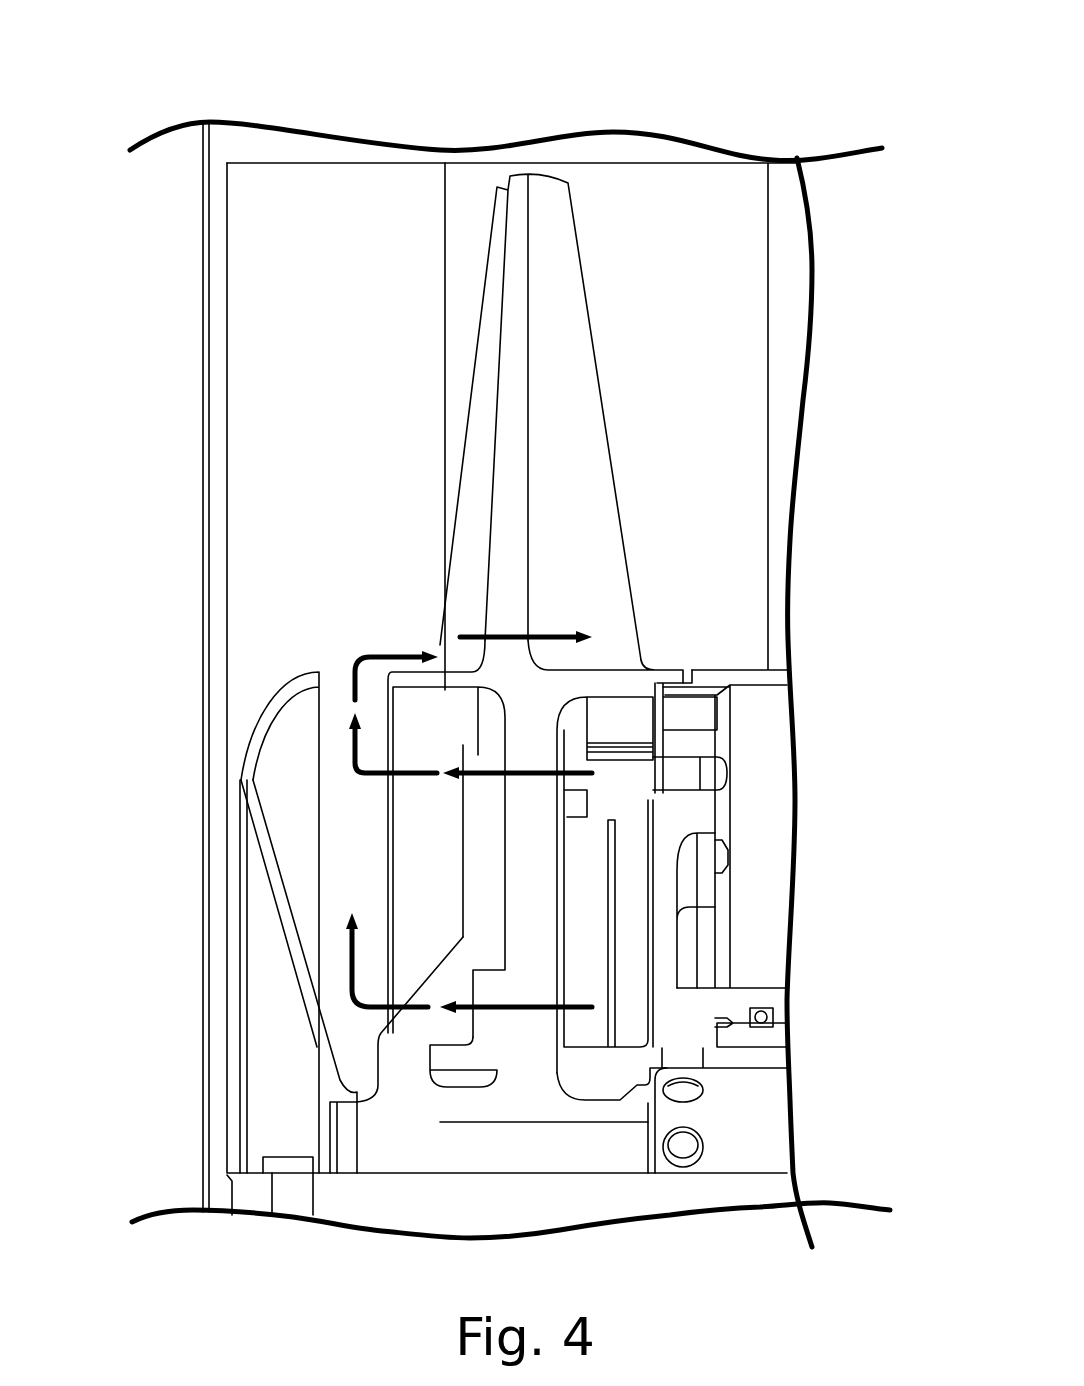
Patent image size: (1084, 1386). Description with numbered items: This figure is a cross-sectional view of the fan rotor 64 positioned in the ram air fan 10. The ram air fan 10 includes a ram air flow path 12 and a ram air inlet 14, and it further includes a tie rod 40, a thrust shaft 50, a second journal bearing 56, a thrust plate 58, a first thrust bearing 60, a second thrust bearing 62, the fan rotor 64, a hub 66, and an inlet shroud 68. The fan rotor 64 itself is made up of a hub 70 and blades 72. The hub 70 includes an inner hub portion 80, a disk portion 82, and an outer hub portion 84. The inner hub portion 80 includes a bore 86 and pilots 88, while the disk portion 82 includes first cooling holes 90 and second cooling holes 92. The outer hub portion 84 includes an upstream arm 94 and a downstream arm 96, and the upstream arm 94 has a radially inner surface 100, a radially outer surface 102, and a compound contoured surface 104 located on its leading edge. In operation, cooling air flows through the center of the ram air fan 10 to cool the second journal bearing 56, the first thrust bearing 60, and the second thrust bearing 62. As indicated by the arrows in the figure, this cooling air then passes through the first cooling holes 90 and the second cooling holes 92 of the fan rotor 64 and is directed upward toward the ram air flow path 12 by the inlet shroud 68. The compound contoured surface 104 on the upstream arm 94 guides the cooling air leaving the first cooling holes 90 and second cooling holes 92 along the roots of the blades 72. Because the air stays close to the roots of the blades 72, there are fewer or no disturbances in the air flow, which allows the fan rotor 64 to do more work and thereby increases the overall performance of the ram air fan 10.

The ram air fan 10 is at (308, 96).
The ram air flow path 12 is at (692, 396).
The ram air inlet 14 is at (203, 297).
The tie rod 40 is at (752, 1187).
The thrust shaft 50 is at (745, 1053).
The second journal bearing 56 is at (763, 1032).
The thrust plate 58 is at (590, 962).
The first thrust bearing 60 is at (648, 893).
The second thrust bearing 62 is at (610, 868).
The fan rotor 64 is at (606, 218).
The hub 66 is at (478, 925).
The inlet shroud 68 is at (273, 860).
The hub 70 is at (563, 835).
The blades 72 is at (560, 327).
The inner hub portion 80 is at (530, 1100).
The disk portion 82 is at (548, 947).
The outer hub portion 84 is at (530, 747).
The bore 86 is at (592, 1128).
The pilots 88 is at (433, 1073).
The first cooling holes 90 is at (530, 1018).
The second cooling holes 92 is at (345, 765).
The upstream arm 94 is at (443, 658).
The downstream arm 96 is at (614, 684).
The radially inner surface 100 is at (492, 672).
The radially outer surface 102 is at (444, 680).
The compound contoured surface 104 is at (426, 657).